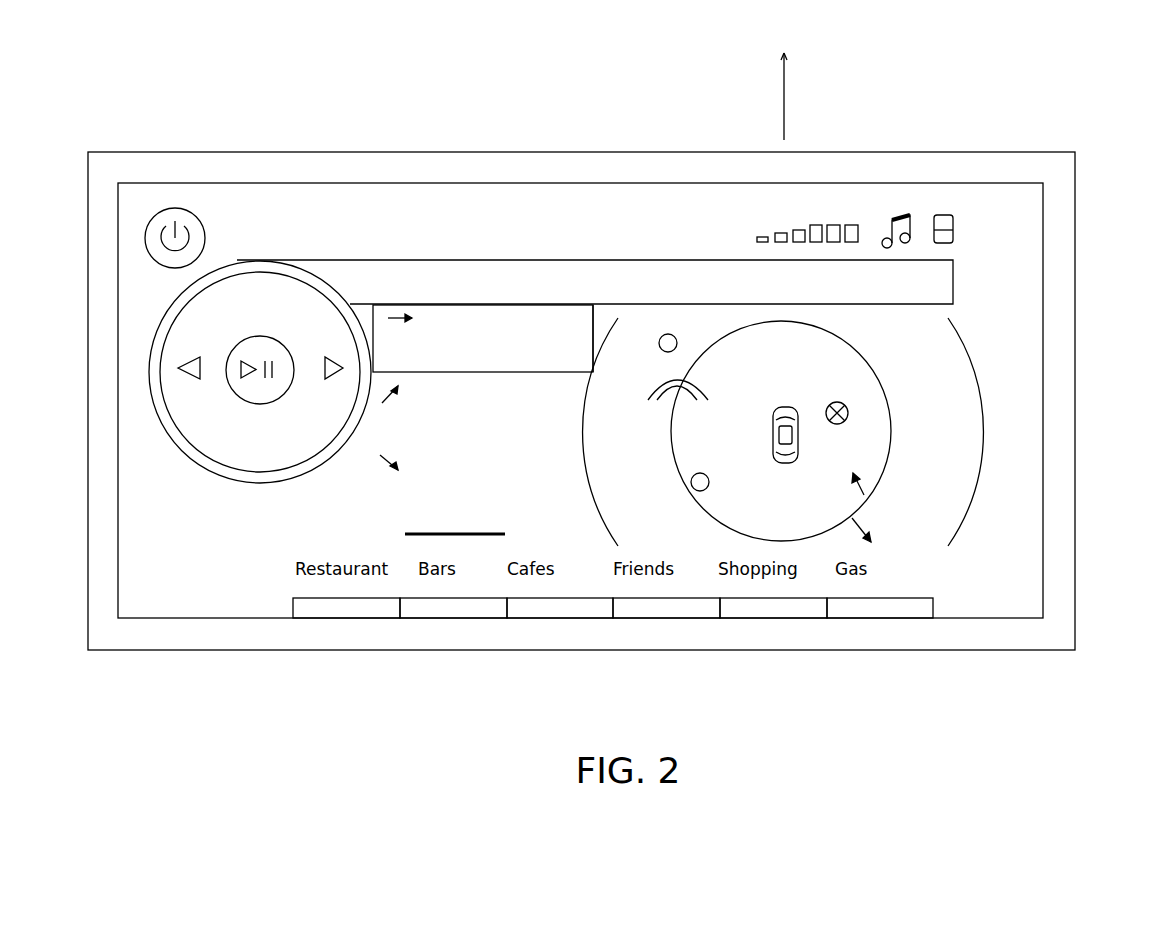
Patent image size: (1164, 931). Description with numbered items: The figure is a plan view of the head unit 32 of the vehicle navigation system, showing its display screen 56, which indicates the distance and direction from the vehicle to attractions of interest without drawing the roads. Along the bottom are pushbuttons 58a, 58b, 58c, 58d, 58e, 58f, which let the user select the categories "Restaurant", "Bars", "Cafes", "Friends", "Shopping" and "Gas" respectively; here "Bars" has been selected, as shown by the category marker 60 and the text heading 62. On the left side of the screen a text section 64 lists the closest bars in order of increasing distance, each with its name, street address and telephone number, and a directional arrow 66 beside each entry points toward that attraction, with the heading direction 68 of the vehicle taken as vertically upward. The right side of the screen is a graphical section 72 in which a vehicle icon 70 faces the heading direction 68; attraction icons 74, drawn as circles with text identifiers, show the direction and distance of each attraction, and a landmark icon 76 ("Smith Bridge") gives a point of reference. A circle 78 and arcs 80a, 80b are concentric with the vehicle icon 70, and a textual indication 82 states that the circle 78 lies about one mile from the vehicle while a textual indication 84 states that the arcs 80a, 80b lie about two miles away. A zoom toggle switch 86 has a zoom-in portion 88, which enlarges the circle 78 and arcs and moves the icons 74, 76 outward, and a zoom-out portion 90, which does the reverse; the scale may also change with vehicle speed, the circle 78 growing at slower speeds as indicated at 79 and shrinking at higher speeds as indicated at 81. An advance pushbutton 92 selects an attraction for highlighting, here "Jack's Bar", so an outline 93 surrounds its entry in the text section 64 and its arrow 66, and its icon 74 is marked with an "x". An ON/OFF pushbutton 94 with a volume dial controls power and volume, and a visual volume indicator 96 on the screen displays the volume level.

The head unit 32 is at (960, 103).
The display screen 56 is at (1010, 352).
The pushbutton 58a is at (363, 608).
The pushbutton 58b is at (470, 608).
The pushbutton 58c is at (576, 608).
The pushbutton 58d is at (683, 608).
The pushbutton 58e is at (789, 608).
The pushbutton 58f is at (895, 608).
The category marker 60 is at (407, 533).
The text heading 62 is at (440, 279).
The text section 64 is at (567, 323).
The directional arrows 66 is at (390, 471).
The heading direction 68 is at (786, 102).
The vehicle icon 70 is at (787, 407).
The graphical section 72 is at (928, 331).
The attraction icons 74 is at (663, 352).
The landmark icons 76 is at (708, 384).
The circle 78 is at (733, 528).
The zoom-in indication 79 is at (856, 519).
The arc 80a is at (587, 473).
The arc 80b is at (979, 470).
The zoom-out indication 81 is at (864, 492).
The textual indication 82 is at (927, 447).
The textual indication 84 is at (987, 520).
The zoom toggle switch 86 is at (235, 440).
The zoom-in portion 88 is at (327, 378).
The zoom-out portion 90 is at (195, 378).
The advance pushbutton 92 is at (271, 345).
The outline 93 is at (606, 316).
The ON/OFF pushbutton 94 is at (193, 218).
The visual volume indicator 96 is at (808, 225).